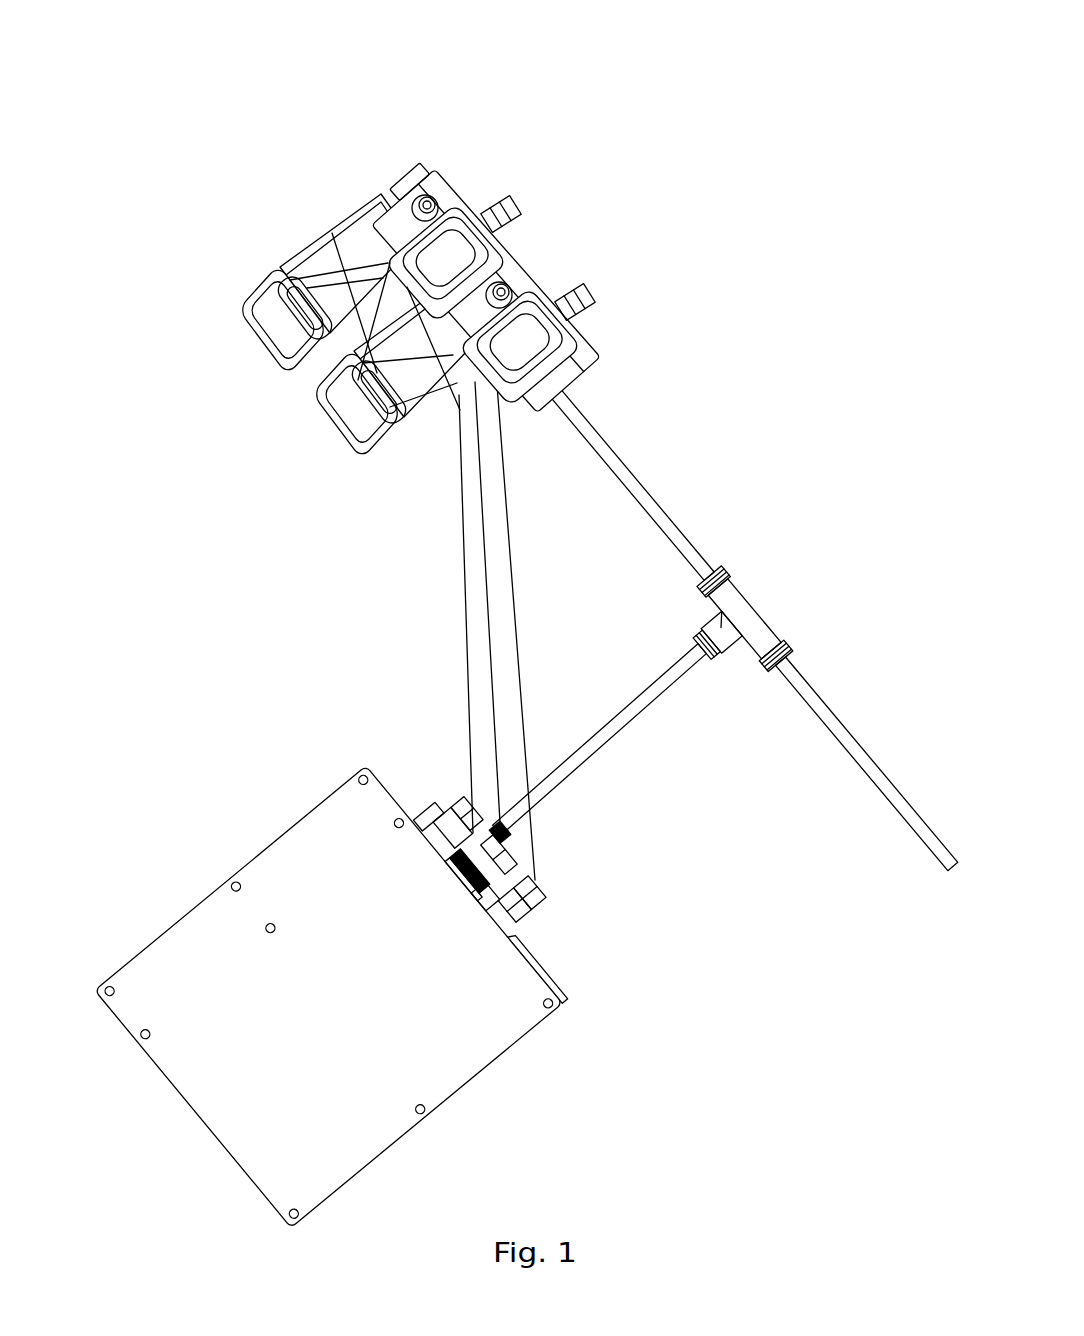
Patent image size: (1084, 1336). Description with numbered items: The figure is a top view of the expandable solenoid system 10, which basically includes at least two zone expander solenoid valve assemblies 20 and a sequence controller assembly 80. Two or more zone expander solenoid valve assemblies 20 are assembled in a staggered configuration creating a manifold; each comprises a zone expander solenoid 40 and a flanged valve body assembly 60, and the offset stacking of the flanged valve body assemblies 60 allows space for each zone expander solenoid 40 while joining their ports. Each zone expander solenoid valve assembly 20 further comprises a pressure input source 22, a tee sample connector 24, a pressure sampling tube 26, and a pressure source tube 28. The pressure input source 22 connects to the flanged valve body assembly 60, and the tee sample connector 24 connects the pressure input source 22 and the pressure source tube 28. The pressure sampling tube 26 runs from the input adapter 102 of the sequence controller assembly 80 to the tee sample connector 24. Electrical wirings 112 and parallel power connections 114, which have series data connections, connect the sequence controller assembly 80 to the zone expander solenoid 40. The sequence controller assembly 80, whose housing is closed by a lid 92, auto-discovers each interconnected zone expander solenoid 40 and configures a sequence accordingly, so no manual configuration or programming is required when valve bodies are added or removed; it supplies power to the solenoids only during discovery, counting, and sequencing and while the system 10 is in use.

The expandable solenoid system 10 is at (826, 68).
The zone expander solenoid valve assembly 20 is at (435, 305).
The pressure input source 22 is at (695, 558).
The tee sample connector 24 is at (735, 600).
The pressure sampling tube 26 is at (657, 688).
The pressure source tube 28 is at (928, 837).
The zone expander solenoid 40 is at (518, 226).
The flanged valve body assembly 60 is at (481, 248).
The sequence controller assembly 80 is at (303, 979).
The lid 92 is at (462, 1060).
The input adapter 102 is at (477, 835).
The electrical wirings 112 is at (508, 537).
The parallel power connections 114 is at (340, 273).